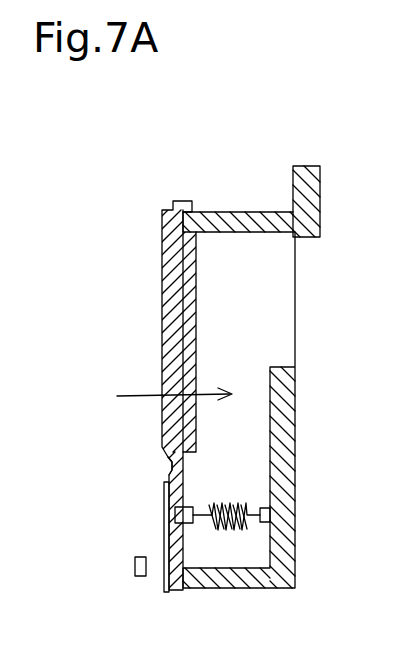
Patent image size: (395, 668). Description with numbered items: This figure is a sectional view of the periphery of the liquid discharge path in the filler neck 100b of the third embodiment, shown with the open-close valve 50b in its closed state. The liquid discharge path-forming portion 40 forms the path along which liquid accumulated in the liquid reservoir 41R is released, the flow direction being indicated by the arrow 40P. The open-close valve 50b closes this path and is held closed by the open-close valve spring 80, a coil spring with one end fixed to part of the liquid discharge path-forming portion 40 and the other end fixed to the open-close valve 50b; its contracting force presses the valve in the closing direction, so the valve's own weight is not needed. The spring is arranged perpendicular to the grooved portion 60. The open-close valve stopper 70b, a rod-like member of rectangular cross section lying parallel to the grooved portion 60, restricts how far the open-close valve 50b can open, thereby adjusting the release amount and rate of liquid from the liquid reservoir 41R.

The liquid discharge path-forming portion 40 is at (162, 337).
The pressing direction 40P is at (147, 396).
The liquid reservoir 41R is at (211, 545).
The open-close valve 50b is at (175, 590).
The grooved portion 60 is at (167, 470).
The open-close valve stopper 70b is at (134, 571).
The open-close valve spring 80 is at (250, 533).
The filler neck 100b is at (300, 161).